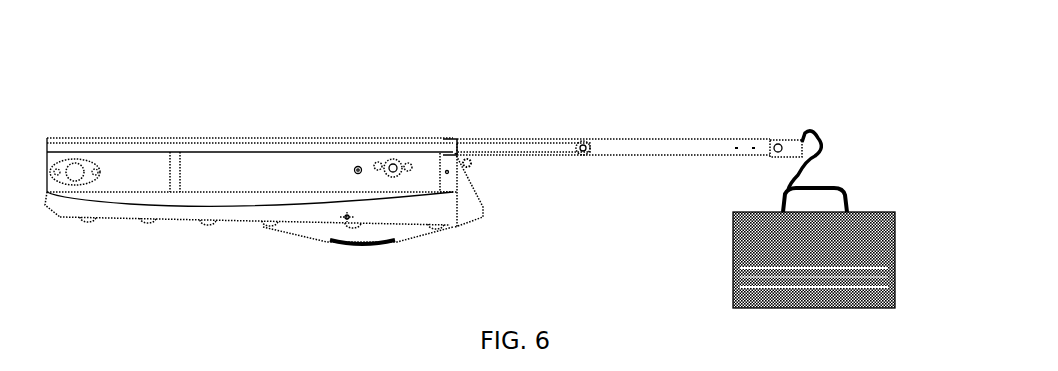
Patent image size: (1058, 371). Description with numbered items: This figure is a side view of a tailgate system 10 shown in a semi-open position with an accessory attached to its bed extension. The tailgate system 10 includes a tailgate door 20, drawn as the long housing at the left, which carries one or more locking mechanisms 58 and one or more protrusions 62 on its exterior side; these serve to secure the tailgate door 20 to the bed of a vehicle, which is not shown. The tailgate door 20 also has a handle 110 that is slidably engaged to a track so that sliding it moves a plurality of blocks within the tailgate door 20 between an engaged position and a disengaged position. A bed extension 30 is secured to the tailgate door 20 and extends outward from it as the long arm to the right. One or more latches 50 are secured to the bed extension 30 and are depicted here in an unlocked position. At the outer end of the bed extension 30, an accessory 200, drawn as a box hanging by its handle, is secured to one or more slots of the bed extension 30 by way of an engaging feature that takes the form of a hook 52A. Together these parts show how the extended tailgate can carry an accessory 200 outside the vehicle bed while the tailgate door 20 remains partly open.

The tailgate system 10 is at (297, 79).
The tailgate door 20 is at (130, 173).
The bed extension 30 is at (600, 140).
The latches 50 is at (623, 150).
The hook 52A is at (826, 155).
The locking mechanisms 58 is at (392, 163).
The protrusions 62 is at (77, 172).
The handle 110 is at (470, 163).
The accessory 200 is at (893, 242).